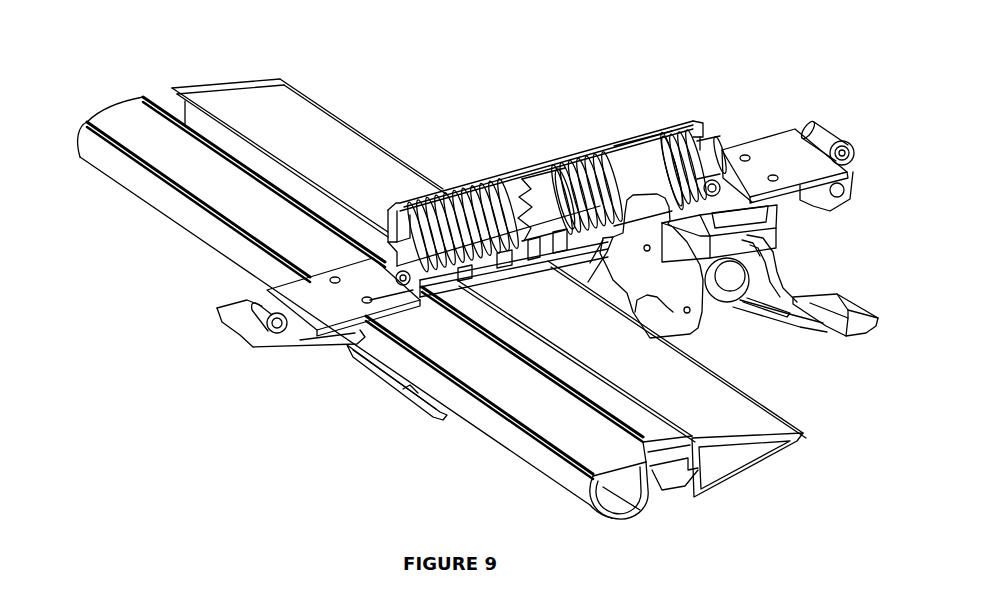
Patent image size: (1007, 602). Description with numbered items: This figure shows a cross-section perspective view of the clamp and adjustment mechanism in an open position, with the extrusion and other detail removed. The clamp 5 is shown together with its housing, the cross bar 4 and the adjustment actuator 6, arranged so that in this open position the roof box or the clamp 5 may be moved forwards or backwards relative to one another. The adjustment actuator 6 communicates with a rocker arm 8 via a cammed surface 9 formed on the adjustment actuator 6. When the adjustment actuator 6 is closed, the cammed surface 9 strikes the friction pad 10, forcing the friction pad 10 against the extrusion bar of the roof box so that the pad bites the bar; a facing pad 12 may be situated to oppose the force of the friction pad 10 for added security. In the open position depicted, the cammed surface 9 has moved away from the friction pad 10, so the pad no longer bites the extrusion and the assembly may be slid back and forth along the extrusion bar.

The cross bar 4 is at (200, 222).
The clamp 5 is at (408, 393).
The adjustment actuator 6 is at (838, 335).
The rocker arm 8 is at (813, 198).
The cammed surface 9 is at (783, 258).
The friction pad 10 is at (697, 223).
The facing pad 12 is at (783, 150).